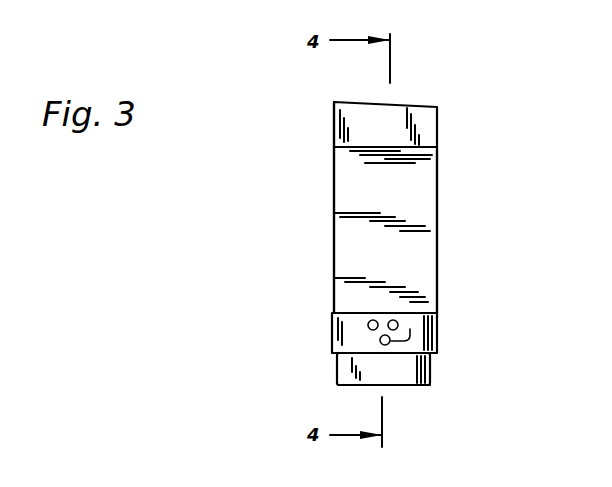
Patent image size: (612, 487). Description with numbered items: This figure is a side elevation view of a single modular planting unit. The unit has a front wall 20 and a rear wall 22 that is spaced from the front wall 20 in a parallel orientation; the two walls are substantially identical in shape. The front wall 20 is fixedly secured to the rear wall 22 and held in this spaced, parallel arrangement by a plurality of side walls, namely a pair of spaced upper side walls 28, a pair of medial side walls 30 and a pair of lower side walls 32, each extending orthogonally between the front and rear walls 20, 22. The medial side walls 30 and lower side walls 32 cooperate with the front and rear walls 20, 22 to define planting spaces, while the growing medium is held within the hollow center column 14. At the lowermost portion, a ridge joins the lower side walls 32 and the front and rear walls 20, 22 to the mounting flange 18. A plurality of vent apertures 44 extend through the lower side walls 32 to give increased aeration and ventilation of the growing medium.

The hollow center column 14 is at (431, 104).
The rear wall 22 is at (440, 200).
The front wall 20 is at (333, 204).
The upper side walls 28 is at (431, 132).
The medial side walls 30 is at (422, 268).
The lower side walls 32 is at (332, 333).
The mounting flange 18 is at (431, 363).
The vent apertures 44 is at (405, 386).